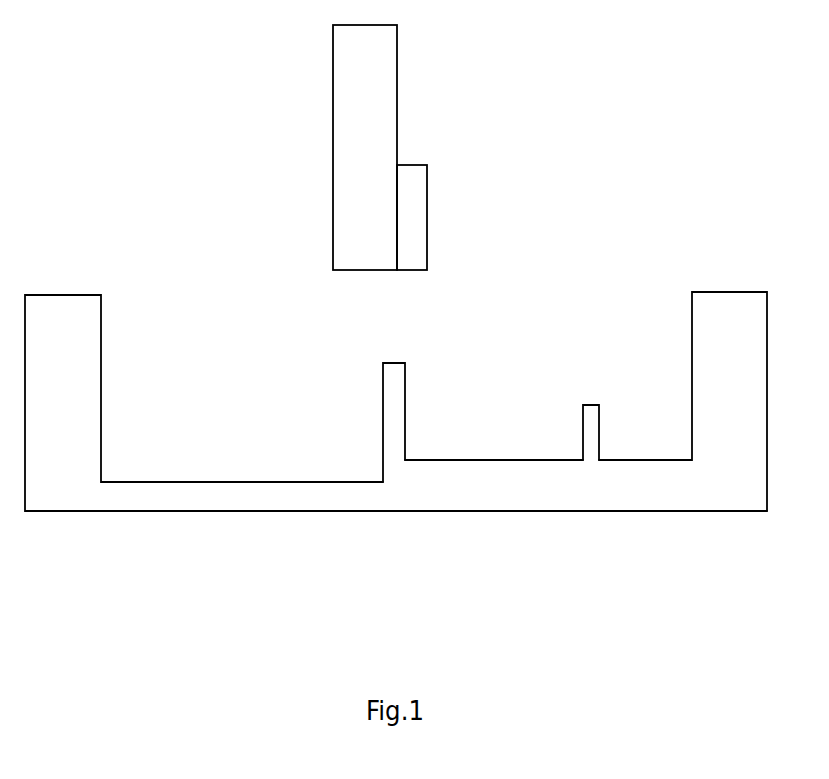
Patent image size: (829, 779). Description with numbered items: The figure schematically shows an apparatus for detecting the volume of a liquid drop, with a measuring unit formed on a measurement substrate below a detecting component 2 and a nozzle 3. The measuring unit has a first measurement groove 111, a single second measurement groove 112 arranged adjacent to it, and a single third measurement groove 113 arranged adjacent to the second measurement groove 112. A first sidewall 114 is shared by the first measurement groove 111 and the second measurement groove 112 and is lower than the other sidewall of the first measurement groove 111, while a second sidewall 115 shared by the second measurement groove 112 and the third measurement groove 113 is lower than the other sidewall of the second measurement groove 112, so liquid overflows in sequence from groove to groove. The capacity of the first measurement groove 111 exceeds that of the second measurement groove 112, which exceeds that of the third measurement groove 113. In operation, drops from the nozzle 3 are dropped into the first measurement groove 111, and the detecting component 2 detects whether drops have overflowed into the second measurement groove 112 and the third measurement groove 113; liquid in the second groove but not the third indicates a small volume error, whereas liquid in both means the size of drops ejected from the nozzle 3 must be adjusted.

The detecting component 2 is at (410, 208).
The nozzle 3 is at (333, 147).
The first measurement groove 111 is at (330, 455).
The second measurement groove 112 is at (482, 430).
The third measurement groove 113 is at (615, 417).
The first sidewall 114 is at (404, 409).
The second sidewall 115 is at (599, 440).